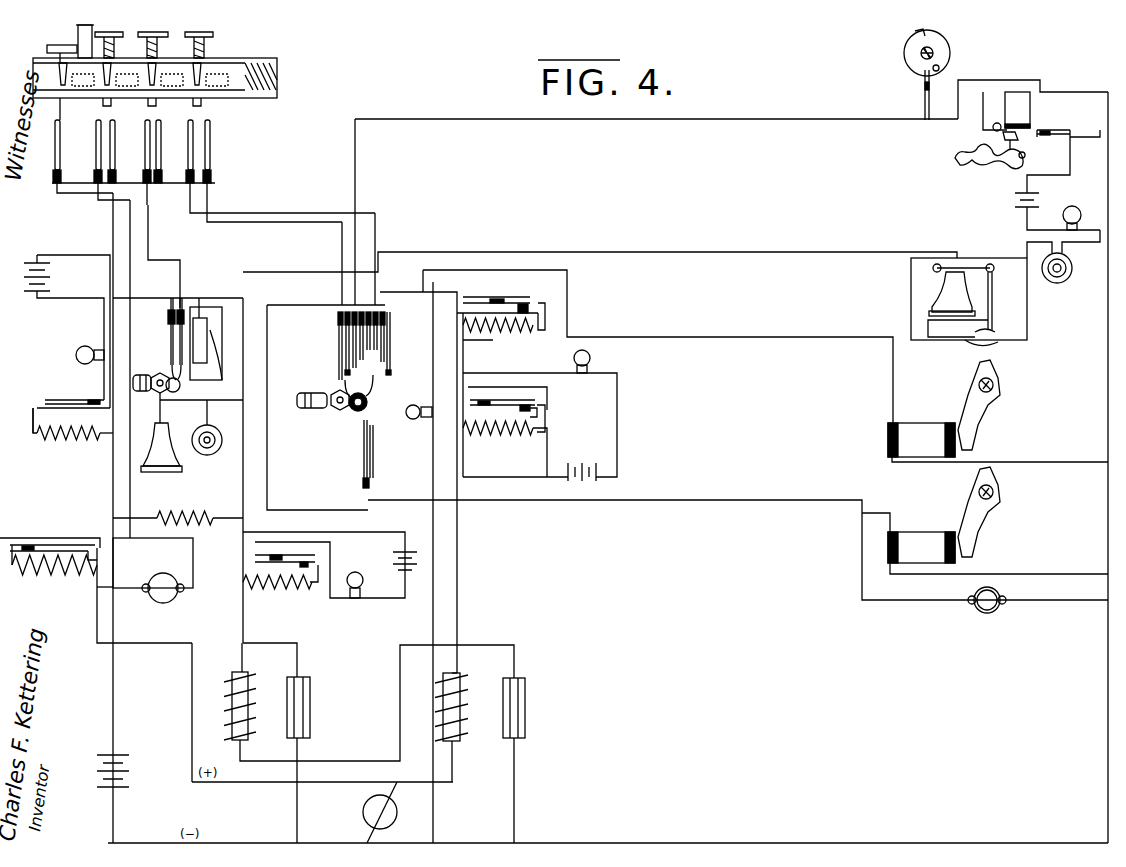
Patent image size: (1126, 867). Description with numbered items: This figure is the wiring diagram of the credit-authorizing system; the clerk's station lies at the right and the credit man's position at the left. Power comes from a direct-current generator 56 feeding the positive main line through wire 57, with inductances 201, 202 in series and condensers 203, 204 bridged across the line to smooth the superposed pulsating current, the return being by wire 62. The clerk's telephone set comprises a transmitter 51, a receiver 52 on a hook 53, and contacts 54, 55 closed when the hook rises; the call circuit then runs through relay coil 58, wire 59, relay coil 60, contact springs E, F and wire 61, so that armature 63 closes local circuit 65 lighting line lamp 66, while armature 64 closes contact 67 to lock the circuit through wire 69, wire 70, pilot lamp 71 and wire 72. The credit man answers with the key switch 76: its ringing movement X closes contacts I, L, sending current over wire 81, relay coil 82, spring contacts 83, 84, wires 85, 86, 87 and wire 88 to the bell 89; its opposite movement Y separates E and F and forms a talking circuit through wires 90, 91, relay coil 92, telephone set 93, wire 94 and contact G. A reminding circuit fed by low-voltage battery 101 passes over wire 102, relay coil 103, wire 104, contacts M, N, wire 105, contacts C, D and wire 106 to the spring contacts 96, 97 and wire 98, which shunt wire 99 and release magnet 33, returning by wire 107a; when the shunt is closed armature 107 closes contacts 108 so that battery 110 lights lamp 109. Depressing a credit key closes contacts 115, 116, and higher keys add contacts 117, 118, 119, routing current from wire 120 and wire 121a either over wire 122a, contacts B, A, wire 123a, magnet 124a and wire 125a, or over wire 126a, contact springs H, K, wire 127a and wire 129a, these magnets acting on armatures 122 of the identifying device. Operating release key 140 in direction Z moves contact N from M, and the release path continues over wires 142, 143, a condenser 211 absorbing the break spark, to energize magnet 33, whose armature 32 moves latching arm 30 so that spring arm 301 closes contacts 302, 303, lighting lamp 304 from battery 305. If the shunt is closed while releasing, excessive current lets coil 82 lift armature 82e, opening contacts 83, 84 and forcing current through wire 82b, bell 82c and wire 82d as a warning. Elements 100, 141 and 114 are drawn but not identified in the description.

The switch bar 100 is at (240, 70).
The insulating block 141 is at (270, 76).
The wire 102 is at (123, 40).
The relay coil 103 is at (60, 47).
The contact 117 is at (165, 105).
The contact 115 is at (96, 134).
The contact 116 is at (96, 152).
The contact 118 is at (146, 146).
The contact 119 is at (216, 152).
The wire 121a is at (70, 200).
The wire 142 is at (100, 218).
The wire 122a is at (200, 224).
The wire 143 is at (150, 250).
The wire 126a is at (275, 218).
The wire 106 is at (355, 162).
The battery 110 is at (26, 266).
The lamp 109 is at (85, 346).
The contacts 108 is at (50, 400).
The armature 107 is at (33, 432).
The wire 104 is at (140, 298).
The wire 105 is at (230, 298).
The contact M is at (170, 338).
The contact N is at (180, 387).
The release key 140 is at (150, 375).
The arrow Z is at (140, 392).
The condenser 211 is at (206, 370).
The wire 94 is at (243, 340).
The telephone set 93 is at (172, 440).
The wire 120 is at (138, 500).
The wire 86 is at (140, 525).
The wire 87 is at (216, 520).
The relay coil 82 is at (58, 578).
The spring contact 83 is at (42, 544).
The spring contact 84 is at (66, 548).
The wire 85 is at (98, 540).
The armature 82e is at (120, 562).
The wire 82d is at (196, 560).
The wire 82b is at (80, 590).
The bell 82c is at (170, 594).
The wire 81 is at (192, 695).
The battery 101 is at (97, 773).
The wire 107a is at (113, 818).
The wire 91 is at (243, 628).
The relay coil 92 is at (275, 588).
The lamp 114 is at (355, 572).
The inductance 202 is at (248, 696).
The condenser 204 is at (311, 710).
The wire 90 is at (348, 761).
The generator 56 is at (363, 813).
The wire 57 is at (457, 596).
The wire 72 is at (420, 618).
The inductance 201 is at (462, 700).
The condenser 203 is at (526, 713).
The wire 123a is at (270, 490).
The contact A is at (331, 351).
The contact B is at (340, 370).
The contact C is at (346, 356).
The contact D is at (352, 343).
The contact spring E is at (358, 330).
The contact G is at (380, 337).
The contact spring H is at (384, 352).
The contact spring K is at (390, 367).
The contact spring F is at (368, 403).
The switch 76 is at (314, 410).
The arrow X is at (300, 372).
The arrow Y is at (296, 410).
The contact I is at (363, 456).
The contact L is at (374, 456).
The wire 70 is at (433, 368).
The pilot lamp 71 is at (413, 405).
The wire 69 is at (296, 292).
The wire 127a is at (505, 270).
The wire 61 is at (540, 252).
The contact 67 is at (526, 304).
The armature 64 is at (546, 318).
The relay coil 60 is at (505, 332).
The wire 59 is at (463, 355).
The line lamp 66 is at (590, 358).
The armature 63 is at (545, 420).
The relay coil 58 is at (500, 435).
The local circuit 65 is at (617, 432).
The wire 88 is at (668, 500).
The spring contact 96 is at (924, 93).
The spring contact 97 is at (932, 96).
The wire 98 is at (990, 82).
The wire 99 is at (966, 128).
The magnet 33 is at (1032, 106).
The contact 302 is at (1055, 128).
The contact 303 is at (1062, 130).
The spring arm 301 is at (1056, 138).
The armature 32 is at (1024, 150).
The latching arm 30 is at (987, 162).
The battery 305 is at (1021, 213).
The lamp 304 is at (1080, 204).
The hook 53 is at (968, 266).
The receiver 52 is at (950, 306).
The transmitter 51 is at (1057, 283).
The contact 54 is at (992, 333).
The contact 55 is at (988, 345).
The armature 122 is at (970, 440).
The wire 129a is at (1073, 444).
The magnet 124a is at (925, 538).
The wire 125a is at (1044, 574).
The bell 89 is at (987, 613).
The wire 62 is at (1108, 700).